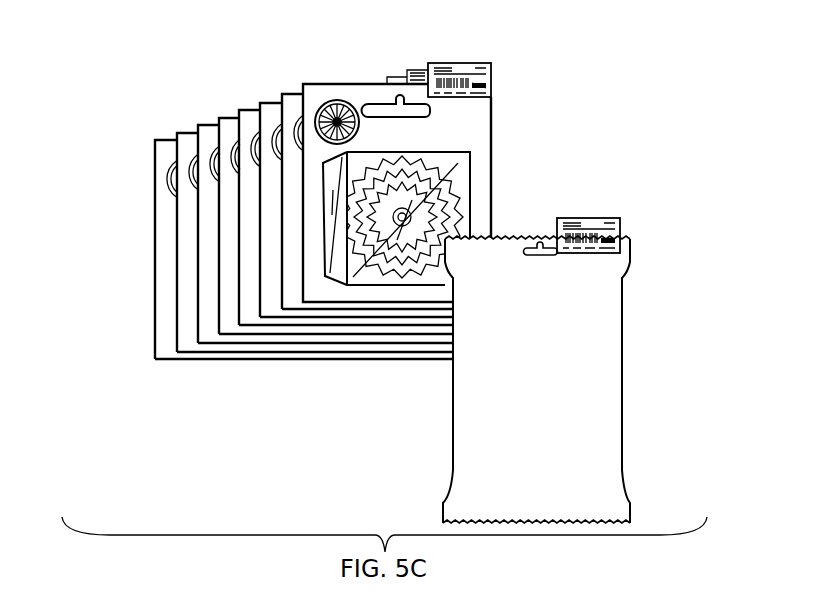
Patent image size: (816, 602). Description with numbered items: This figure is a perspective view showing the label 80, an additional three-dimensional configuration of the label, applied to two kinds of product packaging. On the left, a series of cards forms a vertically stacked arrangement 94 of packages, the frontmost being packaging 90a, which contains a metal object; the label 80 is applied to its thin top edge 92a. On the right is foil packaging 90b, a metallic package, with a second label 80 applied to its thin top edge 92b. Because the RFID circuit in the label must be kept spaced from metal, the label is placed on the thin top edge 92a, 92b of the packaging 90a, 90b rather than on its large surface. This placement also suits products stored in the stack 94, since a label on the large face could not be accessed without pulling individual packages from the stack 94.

The label 80 is at (470, 63).
The packaging 90a is at (470, 125).
The foil packaging 90b is at (597, 372).
The edge 92a is at (316, 84).
The edge 92b is at (497, 236).
The vertically stacked arrangement 94 is at (155, 297).